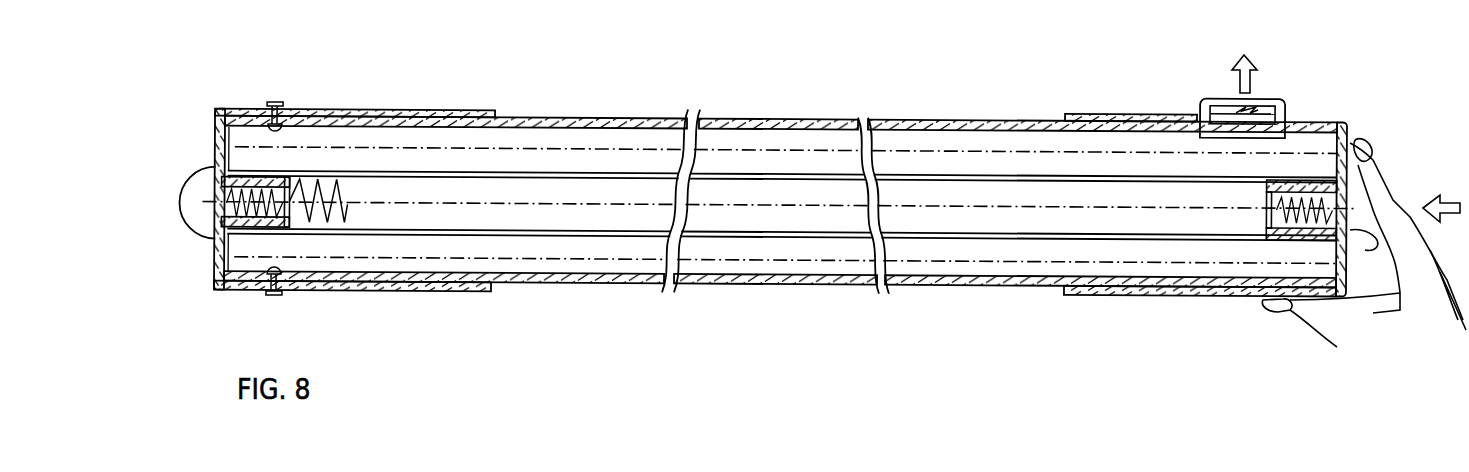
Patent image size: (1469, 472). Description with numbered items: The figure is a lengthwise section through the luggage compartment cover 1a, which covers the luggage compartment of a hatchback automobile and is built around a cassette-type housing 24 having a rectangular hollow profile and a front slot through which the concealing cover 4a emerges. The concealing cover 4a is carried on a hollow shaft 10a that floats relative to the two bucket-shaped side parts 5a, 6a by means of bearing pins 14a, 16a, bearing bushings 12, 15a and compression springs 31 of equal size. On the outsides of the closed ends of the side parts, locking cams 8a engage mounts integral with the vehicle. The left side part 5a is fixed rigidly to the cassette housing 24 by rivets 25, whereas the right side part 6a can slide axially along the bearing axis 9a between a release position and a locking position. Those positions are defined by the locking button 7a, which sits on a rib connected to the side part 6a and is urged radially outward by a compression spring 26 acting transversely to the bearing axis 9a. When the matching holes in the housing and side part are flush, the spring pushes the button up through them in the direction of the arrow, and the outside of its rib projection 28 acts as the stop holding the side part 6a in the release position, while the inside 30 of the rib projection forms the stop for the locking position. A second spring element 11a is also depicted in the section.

The luggage compartment cover 1a is at (582, 90).
The concealing cover 4a is at (503, 150).
The left side part 5a is at (395, 110).
The right side part 6a is at (1112, 112).
The locking button 7a is at (1284, 99).
The locking cams 8a is at (197, 218).
The bearing axis 9a is at (930, 207).
The hollow shaft 10a is at (527, 236).
The compression spring 11a is at (349, 208).
The bearing bushing 12 is at (262, 229).
The bearing pin 14a is at (248, 178).
The bearing bushing 15a is at (1264, 194).
The bearing pin 16a is at (1317, 178).
The cassette-type housing 24 is at (968, 285).
The rivets 25 is at (287, 99).
The compression spring 26 is at (1262, 104).
The rib projection 28 is at (1201, 101).
The inside of rib projection 30 is at (1217, 105).
The compression springs 31 is at (215, 162).